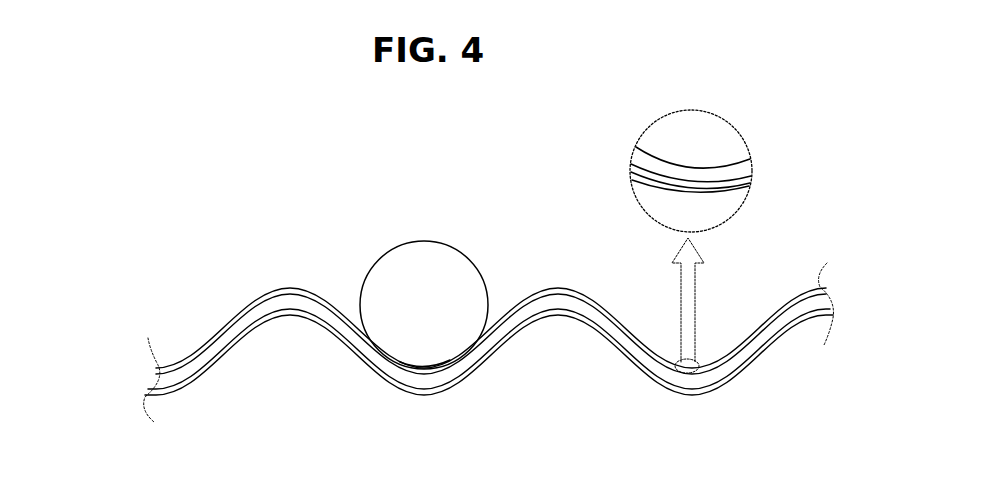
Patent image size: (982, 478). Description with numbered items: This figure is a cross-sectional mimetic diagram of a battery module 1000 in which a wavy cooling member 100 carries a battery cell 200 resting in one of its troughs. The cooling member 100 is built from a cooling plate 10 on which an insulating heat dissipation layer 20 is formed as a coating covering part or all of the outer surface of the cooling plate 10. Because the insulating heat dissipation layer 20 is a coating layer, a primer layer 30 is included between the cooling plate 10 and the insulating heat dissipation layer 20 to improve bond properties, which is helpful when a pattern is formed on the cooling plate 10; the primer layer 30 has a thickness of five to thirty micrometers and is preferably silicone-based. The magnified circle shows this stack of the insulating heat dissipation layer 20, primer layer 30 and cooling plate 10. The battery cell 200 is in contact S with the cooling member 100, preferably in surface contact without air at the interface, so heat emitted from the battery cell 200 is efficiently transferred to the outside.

The battery module 1000 is at (207, 158).
The cooling member 100 is at (156, 250).
The insulating heat dissipation layer 20 is at (262, 291).
The primer layer 30 is at (750, 180).
The cooling plate 10 is at (232, 336).
The battery cell 200 is at (422, 262).
The contact S is at (463, 350).